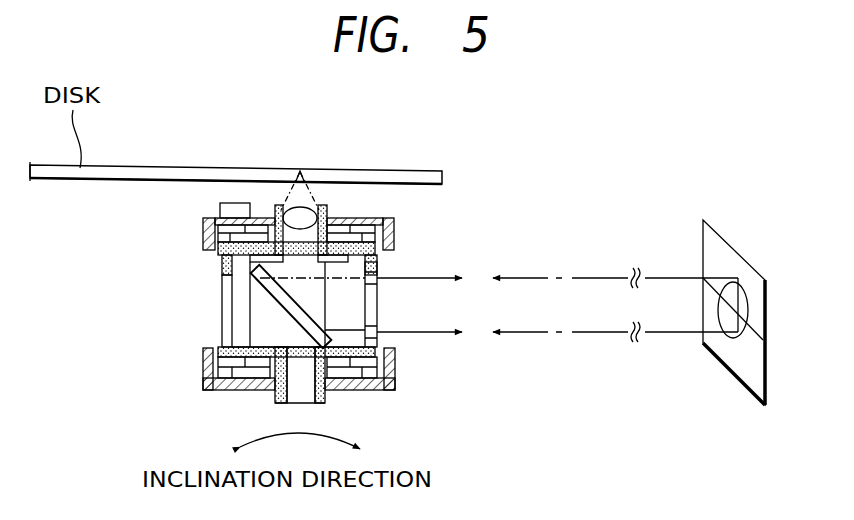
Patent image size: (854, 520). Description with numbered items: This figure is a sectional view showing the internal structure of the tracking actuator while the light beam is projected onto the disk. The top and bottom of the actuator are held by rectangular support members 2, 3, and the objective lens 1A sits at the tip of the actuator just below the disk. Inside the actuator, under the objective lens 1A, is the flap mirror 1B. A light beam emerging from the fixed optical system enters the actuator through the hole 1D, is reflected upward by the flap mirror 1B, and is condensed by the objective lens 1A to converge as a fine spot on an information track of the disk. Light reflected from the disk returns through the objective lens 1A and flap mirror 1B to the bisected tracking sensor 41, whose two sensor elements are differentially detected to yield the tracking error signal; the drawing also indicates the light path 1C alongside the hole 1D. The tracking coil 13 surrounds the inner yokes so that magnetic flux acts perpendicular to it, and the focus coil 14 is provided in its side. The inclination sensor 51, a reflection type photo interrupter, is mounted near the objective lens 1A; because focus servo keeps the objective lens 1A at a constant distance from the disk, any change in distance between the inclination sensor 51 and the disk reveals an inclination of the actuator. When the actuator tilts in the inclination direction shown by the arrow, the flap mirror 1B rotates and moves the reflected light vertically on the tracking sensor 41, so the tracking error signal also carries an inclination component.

The objective lens 1A is at (321, 212).
The flap mirror 1B is at (262, 283).
The incident light beam 1C is at (390, 258).
The hole 1D is at (385, 305).
The rectangular support member 2 is at (405, 220).
The rectangular support member 3 is at (397, 363).
The tracking coil 13 is at (243, 347).
The focus coil 14 is at (232, 375).
The tracking sensor 41 is at (712, 220).
The inclination sensor 51 is at (232, 203).